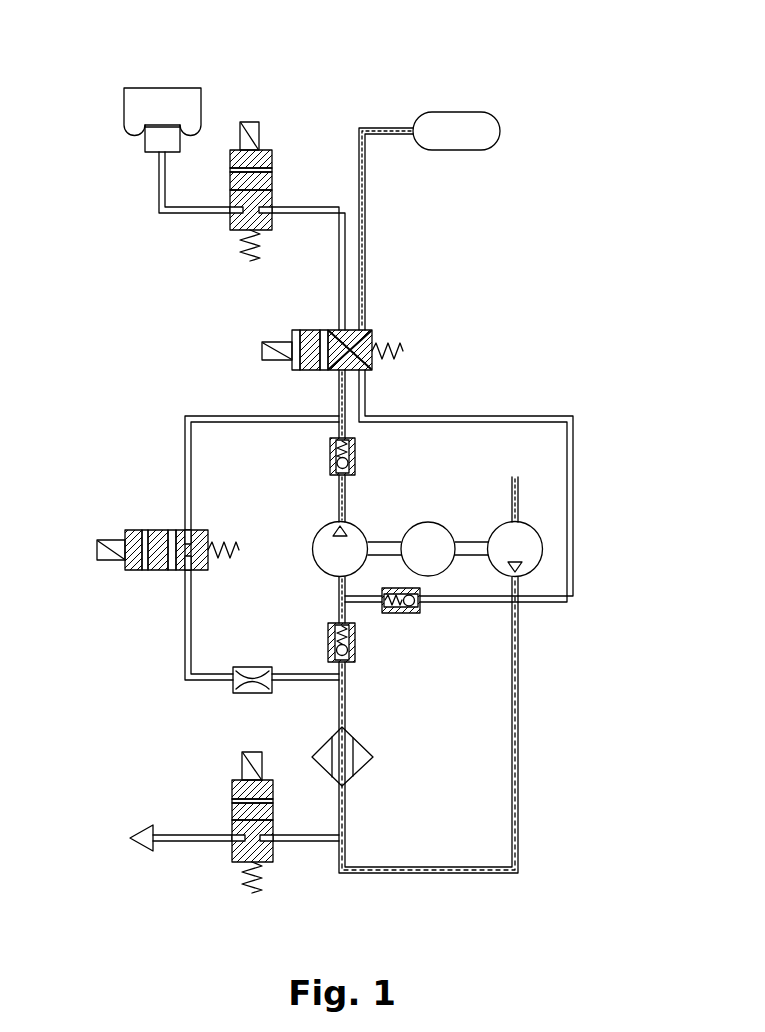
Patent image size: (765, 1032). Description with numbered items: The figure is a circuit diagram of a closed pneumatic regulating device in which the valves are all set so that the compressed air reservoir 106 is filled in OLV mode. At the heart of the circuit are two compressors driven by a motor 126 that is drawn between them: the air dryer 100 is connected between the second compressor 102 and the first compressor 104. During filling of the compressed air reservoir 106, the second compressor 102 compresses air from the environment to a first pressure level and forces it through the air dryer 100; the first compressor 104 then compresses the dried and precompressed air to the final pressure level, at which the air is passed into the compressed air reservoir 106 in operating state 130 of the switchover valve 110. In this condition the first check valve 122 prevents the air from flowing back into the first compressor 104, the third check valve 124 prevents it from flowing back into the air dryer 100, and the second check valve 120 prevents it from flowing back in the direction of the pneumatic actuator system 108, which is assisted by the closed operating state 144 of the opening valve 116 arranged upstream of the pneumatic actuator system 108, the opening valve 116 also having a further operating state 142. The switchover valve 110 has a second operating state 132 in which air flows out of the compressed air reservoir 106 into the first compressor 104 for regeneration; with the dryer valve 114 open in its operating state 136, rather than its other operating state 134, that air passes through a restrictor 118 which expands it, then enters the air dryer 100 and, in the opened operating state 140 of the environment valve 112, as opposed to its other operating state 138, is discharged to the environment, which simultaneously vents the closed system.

The air dryer 100 is at (362, 771).
The second compressor 102 is at (528, 535).
The first compressor 104 is at (322, 540).
The compressed air reservoir 106 is at (456, 120).
The pneumatic actuator system 108 is at (161, 100).
The switchover valve 110 is at (334, 328).
The environment valve 112 is at (202, 822).
The dryer valve 114 is at (166, 547).
The opening valve 116 is at (255, 171).
The restrictor 118 is at (248, 694).
The second check valve 120 is at (410, 615).
The first check valve 122 is at (330, 456).
The third check valve 124 is at (357, 651).
The motor 126 is at (430, 530).
The operating state 130 is at (375, 369).
The operating state 132 is at (305, 369).
The operating state 134 is at (200, 572).
The operating state 136 is at (134, 572).
The operating state 138 is at (240, 853).
The operating state 140 is at (240, 790).
The operating state 142 is at (268, 157).
The closed operating state 144 is at (232, 219).